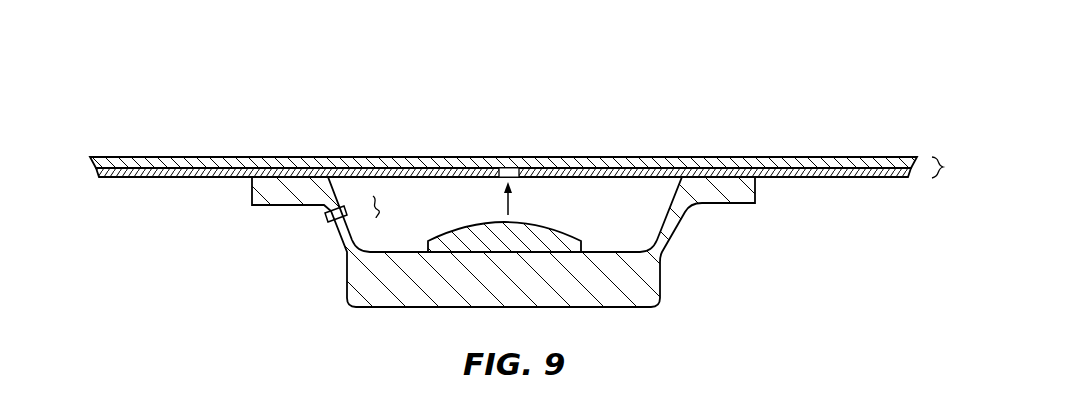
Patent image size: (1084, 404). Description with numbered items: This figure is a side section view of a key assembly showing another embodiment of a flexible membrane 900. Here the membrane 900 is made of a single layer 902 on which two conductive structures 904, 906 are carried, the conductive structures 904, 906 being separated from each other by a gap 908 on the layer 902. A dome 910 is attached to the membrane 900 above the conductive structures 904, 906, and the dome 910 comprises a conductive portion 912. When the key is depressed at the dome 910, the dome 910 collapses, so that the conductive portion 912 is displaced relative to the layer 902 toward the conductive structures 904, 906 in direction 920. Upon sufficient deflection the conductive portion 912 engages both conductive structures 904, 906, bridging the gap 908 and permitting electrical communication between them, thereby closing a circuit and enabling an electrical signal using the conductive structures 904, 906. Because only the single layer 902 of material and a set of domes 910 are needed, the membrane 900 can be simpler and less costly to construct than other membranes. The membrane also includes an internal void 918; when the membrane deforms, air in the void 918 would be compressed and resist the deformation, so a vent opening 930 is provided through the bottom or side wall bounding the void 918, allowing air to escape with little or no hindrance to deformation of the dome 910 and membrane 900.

The flexible membrane 900 is at (943, 167).
The single layer 902 is at (770, 157).
The conductive structure 904 is at (162, 178).
The conductive structure 906 is at (836, 178).
The gap 908 is at (505, 171).
The dome 910 is at (656, 288).
The conductive portion 912 is at (575, 238).
The internal void 918 is at (372, 206).
The direction 920 is at (509, 200).
The vent opening 930 is at (344, 212).